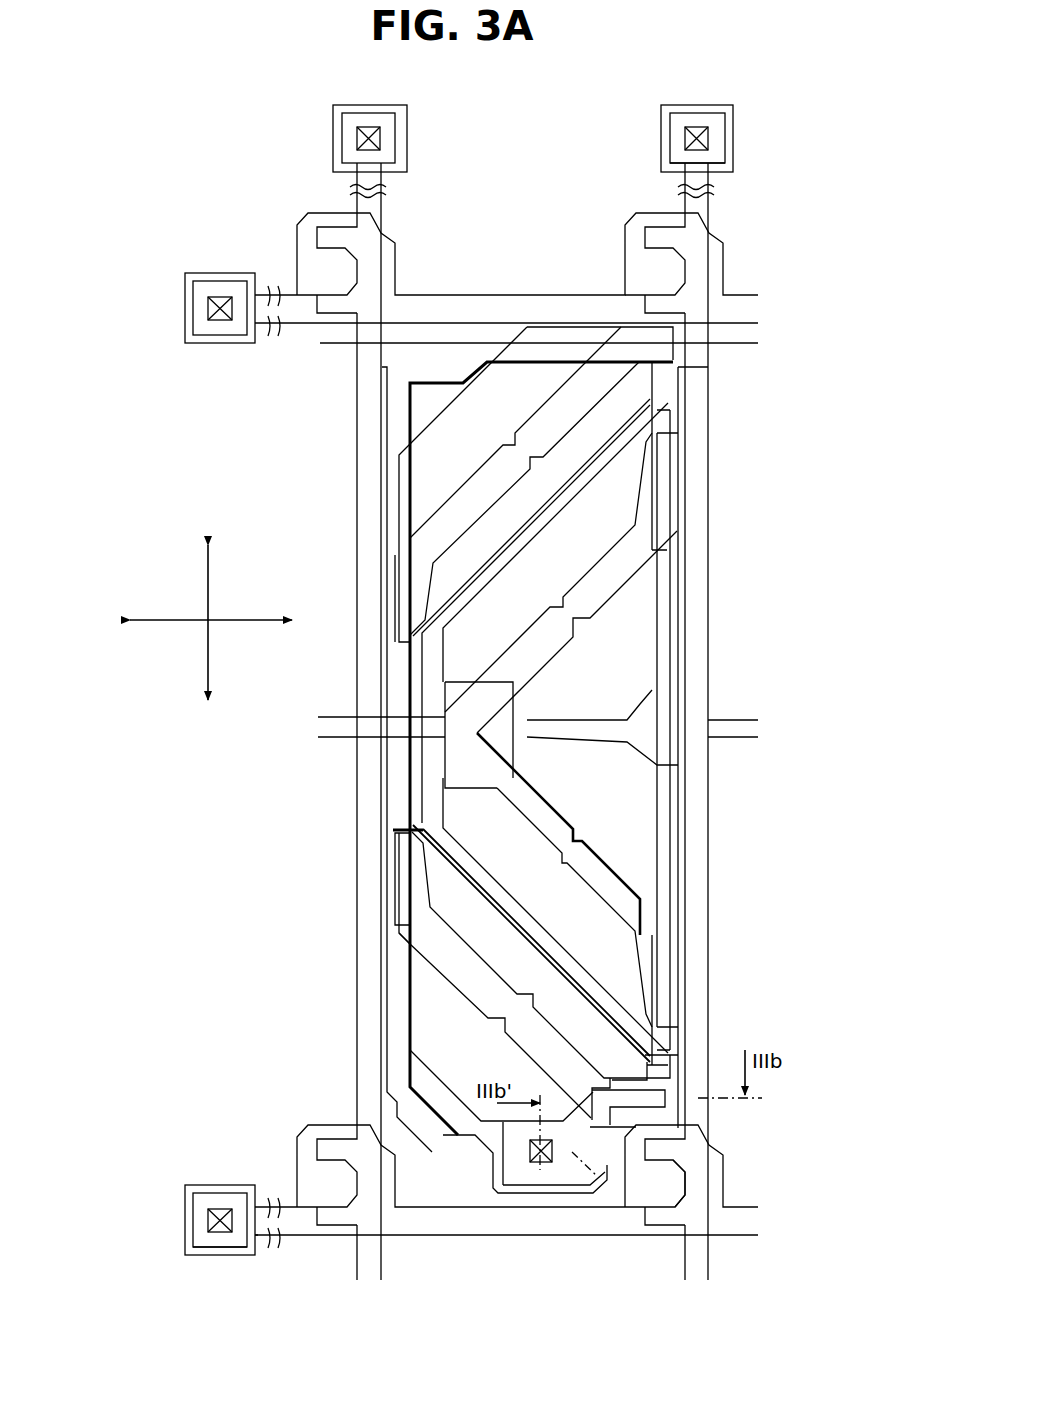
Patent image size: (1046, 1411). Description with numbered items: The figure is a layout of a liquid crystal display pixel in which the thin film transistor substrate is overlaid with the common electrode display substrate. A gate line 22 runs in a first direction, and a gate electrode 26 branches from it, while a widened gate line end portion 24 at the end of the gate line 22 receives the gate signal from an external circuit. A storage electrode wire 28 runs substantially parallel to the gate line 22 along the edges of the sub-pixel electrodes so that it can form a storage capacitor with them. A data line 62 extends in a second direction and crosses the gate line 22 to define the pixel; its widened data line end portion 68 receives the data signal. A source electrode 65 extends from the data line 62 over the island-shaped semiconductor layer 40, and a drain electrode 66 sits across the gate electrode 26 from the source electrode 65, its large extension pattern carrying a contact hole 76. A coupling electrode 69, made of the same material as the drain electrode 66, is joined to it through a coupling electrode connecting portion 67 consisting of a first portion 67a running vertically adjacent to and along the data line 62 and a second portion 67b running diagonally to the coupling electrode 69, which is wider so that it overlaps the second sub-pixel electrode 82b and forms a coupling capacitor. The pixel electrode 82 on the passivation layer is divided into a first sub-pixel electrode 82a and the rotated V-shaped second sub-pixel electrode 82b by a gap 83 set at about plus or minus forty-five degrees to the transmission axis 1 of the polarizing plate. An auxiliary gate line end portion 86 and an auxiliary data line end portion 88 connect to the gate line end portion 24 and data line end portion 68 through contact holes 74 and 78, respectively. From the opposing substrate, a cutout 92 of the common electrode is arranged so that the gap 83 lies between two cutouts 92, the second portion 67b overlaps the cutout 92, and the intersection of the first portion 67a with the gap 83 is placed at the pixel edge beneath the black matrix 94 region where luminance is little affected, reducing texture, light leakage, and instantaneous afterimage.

The transmission axis 1 is at (160, 567).
The gate line 22 is at (432, 1238).
The gate line end portion 24 is at (200, 1185).
The gate electrode 26 is at (722, 1136).
The storage electrode wire 28 is at (330, 368).
The semiconductor layer 40 is at (700, 1180).
The data line 62 is at (710, 612).
The source electrode 65 is at (655, 1228).
The drain electrode 66 is at (571, 1196).
The coupling electrode connecting portion 67 is at (788, 908).
The first portion 67a is at (665, 922).
The second portion 67b is at (660, 888).
The data line end portion 68 is at (683, 108).
The coupling electrode 69 is at (516, 690).
The contact hole 74 is at (185, 1223).
The contact hole 76 is at (541, 1166).
The contact hole 78 is at (684, 134).
The pixel electrode 82 is at (788, 466).
The first sub-pixel electrode 82a is at (620, 480).
The second sub-pixel electrode 82b is at (655, 440).
The gap 83 is at (470, 872).
The auxiliary gate line end portion 86 is at (205, 1256).
The auxiliary data line end portion 88 is at (717, 106).
The cutout 92 is at (458, 482).
The black matrix 94 is at (410, 662).